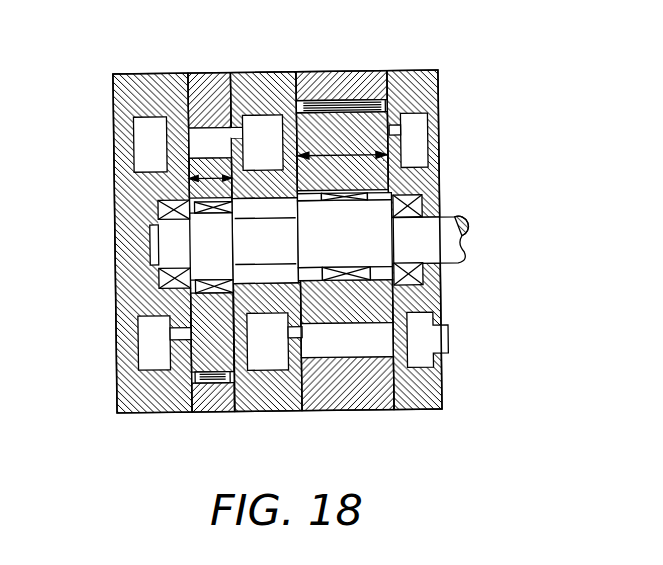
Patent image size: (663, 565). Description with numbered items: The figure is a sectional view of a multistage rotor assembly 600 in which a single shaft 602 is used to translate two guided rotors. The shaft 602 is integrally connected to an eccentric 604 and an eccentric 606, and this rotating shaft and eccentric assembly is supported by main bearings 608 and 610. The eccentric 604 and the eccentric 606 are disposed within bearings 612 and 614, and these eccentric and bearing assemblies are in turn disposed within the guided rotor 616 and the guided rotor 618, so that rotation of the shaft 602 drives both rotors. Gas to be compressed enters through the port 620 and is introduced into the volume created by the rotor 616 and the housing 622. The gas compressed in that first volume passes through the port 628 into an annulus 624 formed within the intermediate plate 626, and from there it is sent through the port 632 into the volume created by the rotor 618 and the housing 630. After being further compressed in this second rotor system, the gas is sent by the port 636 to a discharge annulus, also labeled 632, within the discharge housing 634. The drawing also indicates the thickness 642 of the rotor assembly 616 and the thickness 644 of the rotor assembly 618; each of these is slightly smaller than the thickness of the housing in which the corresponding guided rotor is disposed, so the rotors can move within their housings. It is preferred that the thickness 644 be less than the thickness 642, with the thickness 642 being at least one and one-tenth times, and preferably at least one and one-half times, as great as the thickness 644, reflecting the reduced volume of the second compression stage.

The multistage rotor assembly 600 is at (312, 235).
The shaft 602 is at (468, 224).
The eccentric 604 is at (408, 202).
The eccentric 606 is at (197, 246).
The main bearing 608 is at (426, 278).
The main bearing 610 is at (157, 206).
The bearing 612 is at (417, 294).
The bearing 614 is at (190, 287).
The guided rotor 616 is at (346, 124).
The guided rotor 618 is at (204, 161).
The port 620 is at (447, 342).
The housing 622 is at (341, 411).
The annulus 624 is at (267, 125).
The intermediate plate 626 is at (283, 412).
The port 628 is at (286, 335).
The housing 630 is at (213, 71).
The port / discharge annulus 632 is at (141, 348).
The discharge housing 634 is at (114, 138).
The port 636 is at (181, 336).
The thickness 642 is at (364, 152).
The thickness 644 is at (209, 175).